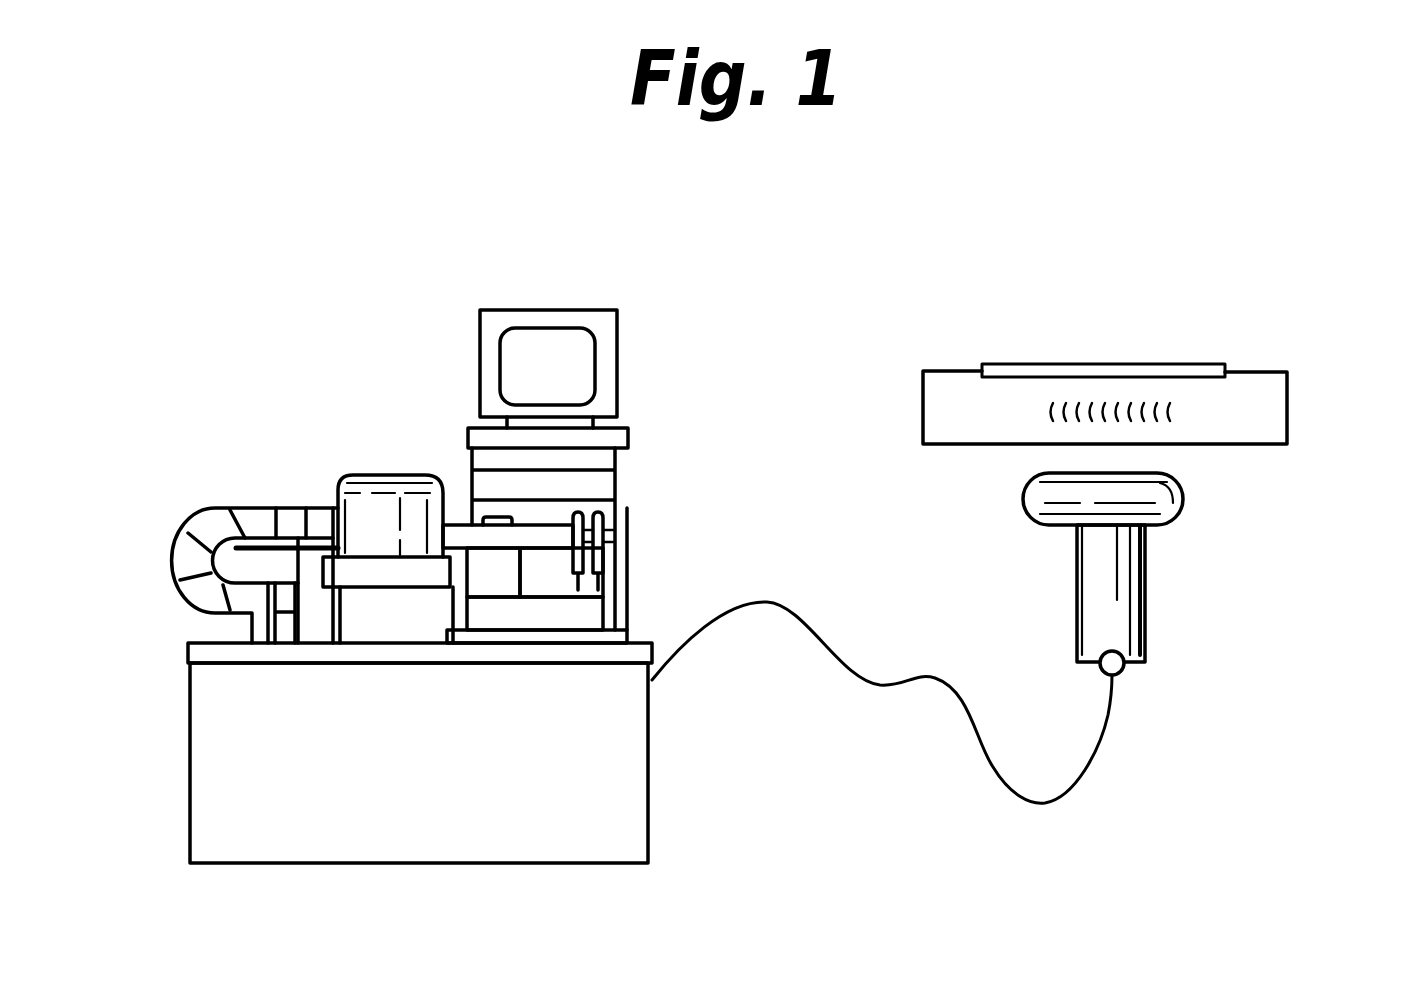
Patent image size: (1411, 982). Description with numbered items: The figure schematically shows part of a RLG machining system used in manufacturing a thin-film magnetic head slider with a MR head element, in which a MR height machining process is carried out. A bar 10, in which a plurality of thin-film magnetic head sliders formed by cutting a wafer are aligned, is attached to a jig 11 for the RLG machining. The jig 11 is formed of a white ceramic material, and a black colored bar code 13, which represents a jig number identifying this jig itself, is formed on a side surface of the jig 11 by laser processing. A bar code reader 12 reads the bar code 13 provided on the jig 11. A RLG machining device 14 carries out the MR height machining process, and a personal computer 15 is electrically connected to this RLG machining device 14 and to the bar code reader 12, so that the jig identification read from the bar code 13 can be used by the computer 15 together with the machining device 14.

The bar 10 is at (1202, 362).
The jig 11 is at (1253, 413).
The bar code reader 12 is at (1122, 613).
The bar code 13 is at (1048, 408).
The RLG machining device 14 is at (647, 783).
The personal computer 15 is at (602, 467).